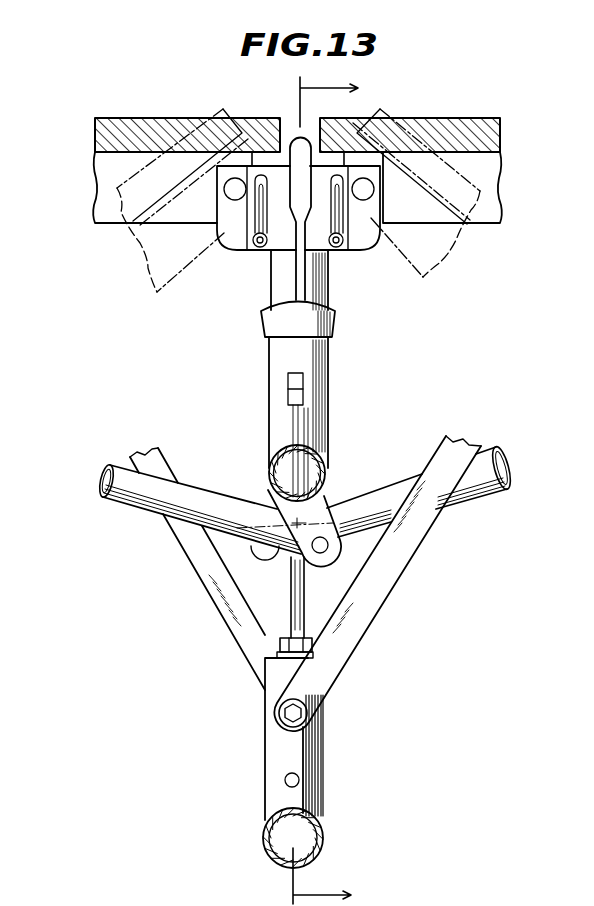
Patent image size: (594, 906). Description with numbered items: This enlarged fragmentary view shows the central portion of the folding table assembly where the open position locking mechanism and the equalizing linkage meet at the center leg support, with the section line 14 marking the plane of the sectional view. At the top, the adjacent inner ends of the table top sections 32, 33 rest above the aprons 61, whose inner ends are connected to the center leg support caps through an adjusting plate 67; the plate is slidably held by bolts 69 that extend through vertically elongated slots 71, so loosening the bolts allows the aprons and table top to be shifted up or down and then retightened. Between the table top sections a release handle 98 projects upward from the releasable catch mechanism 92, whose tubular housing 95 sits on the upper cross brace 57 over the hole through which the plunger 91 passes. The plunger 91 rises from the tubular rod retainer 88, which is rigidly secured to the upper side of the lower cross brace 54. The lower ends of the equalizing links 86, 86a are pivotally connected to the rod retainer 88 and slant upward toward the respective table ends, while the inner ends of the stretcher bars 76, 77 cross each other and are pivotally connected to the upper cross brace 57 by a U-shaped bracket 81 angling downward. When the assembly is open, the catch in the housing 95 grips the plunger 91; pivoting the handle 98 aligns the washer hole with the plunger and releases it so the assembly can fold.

The section line 14— 14 is at (306, 491).
The table top section 32 is at (115, 117).
The table top section 33 is at (477, 118).
The aprons 61 is at (110, 198).
The adjusting plate 67 is at (366, 252).
The bolts 69 is at (257, 247).
The vertically elongated slots 71 is at (328, 191).
The release handle 98 is at (302, 137).
The releasable catch mechanism 92 is at (343, 347).
The tubular housing 95 is at (287, 425).
The upper cross brace 57 is at (321, 478).
The U-shaped bracket 81 is at (267, 495).
The link 86 is at (145, 458).
The link 86a is at (467, 444).
The stretcher bar 76 is at (105, 488).
The stretcher bar 77 is at (488, 494).
The plunger 91 is at (300, 605).
The tubular rod retainer 88 is at (326, 761).
The lower cross brace 54 is at (323, 843).